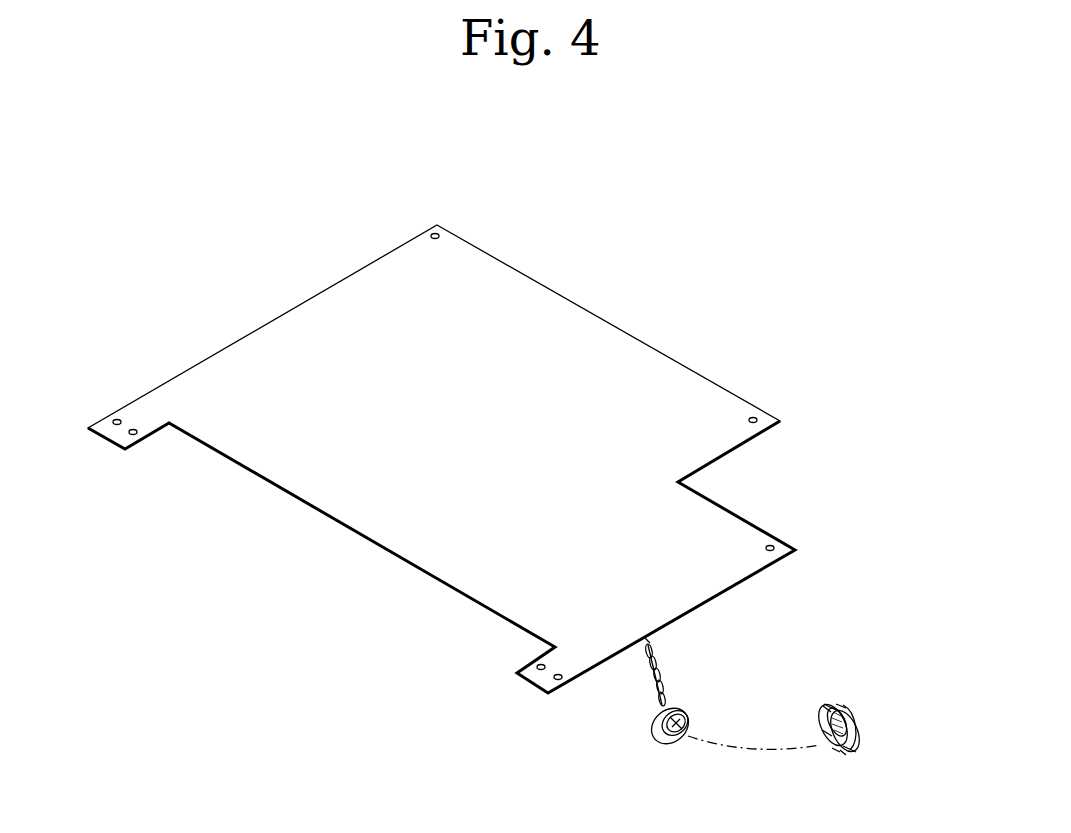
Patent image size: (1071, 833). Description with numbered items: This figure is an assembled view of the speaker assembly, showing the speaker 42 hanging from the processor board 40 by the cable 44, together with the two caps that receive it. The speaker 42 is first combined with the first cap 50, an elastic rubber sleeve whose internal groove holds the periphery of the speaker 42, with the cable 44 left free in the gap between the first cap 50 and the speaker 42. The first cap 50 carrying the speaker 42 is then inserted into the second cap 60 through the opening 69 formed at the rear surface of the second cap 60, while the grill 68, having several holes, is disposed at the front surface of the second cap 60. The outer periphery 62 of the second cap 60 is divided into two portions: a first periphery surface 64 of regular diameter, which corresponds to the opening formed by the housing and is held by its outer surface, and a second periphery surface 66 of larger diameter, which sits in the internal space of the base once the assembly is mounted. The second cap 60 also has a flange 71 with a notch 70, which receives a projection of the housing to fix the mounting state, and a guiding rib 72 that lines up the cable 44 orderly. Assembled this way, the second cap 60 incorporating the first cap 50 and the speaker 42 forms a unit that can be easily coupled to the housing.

The processor board 40 is at (258, 343).
The speaker 42 is at (678, 740).
The cable 44 is at (665, 680).
The first cap 50 is at (652, 733).
The second cap 60 is at (860, 758).
The outer periphery 62 is at (890, 670).
The first periphery surface 64 is at (858, 727).
The second periphery surface 66 is at (850, 712).
The grill 68 is at (826, 735).
The opening 69 is at (826, 708).
The notch 70 is at (836, 754).
The flange 71 is at (843, 757).
The guiding rib 72 is at (823, 719).